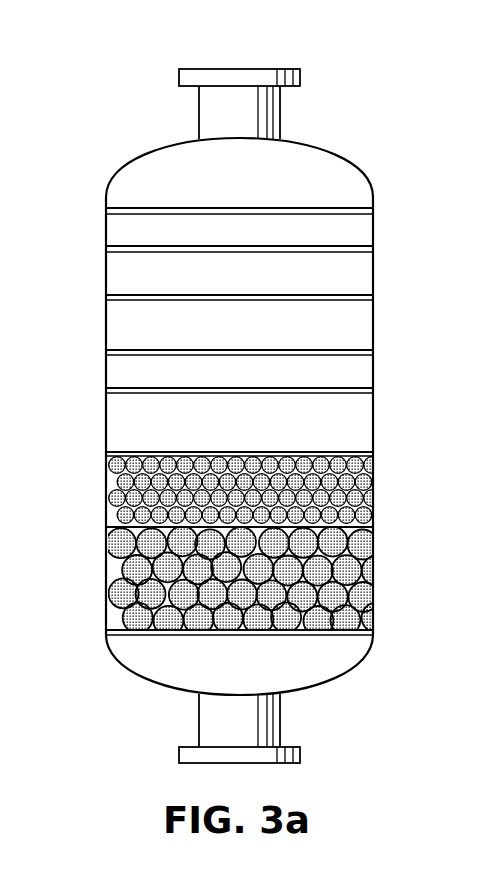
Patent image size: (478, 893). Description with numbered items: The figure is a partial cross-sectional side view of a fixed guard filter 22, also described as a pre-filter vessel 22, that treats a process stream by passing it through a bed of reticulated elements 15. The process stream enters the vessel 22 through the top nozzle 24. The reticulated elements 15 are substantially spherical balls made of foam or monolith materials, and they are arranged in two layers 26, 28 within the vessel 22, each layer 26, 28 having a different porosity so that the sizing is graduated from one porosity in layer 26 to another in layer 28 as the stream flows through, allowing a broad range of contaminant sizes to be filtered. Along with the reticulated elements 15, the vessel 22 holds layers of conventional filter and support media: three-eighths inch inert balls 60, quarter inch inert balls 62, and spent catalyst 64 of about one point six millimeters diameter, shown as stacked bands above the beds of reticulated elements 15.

The reticulated elements 15 is at (242, 530).
The guard filter 22 is at (332, 155).
The inlet nozzle 24 is at (262, 70).
The layer of reticulated elements 26 is at (108, 478).
The layer of reticulated elements 28 is at (108, 592).
The inert balls 60 is at (113, 232).
The inert balls 62 is at (115, 277).
The spent catalyst 64 is at (115, 332).